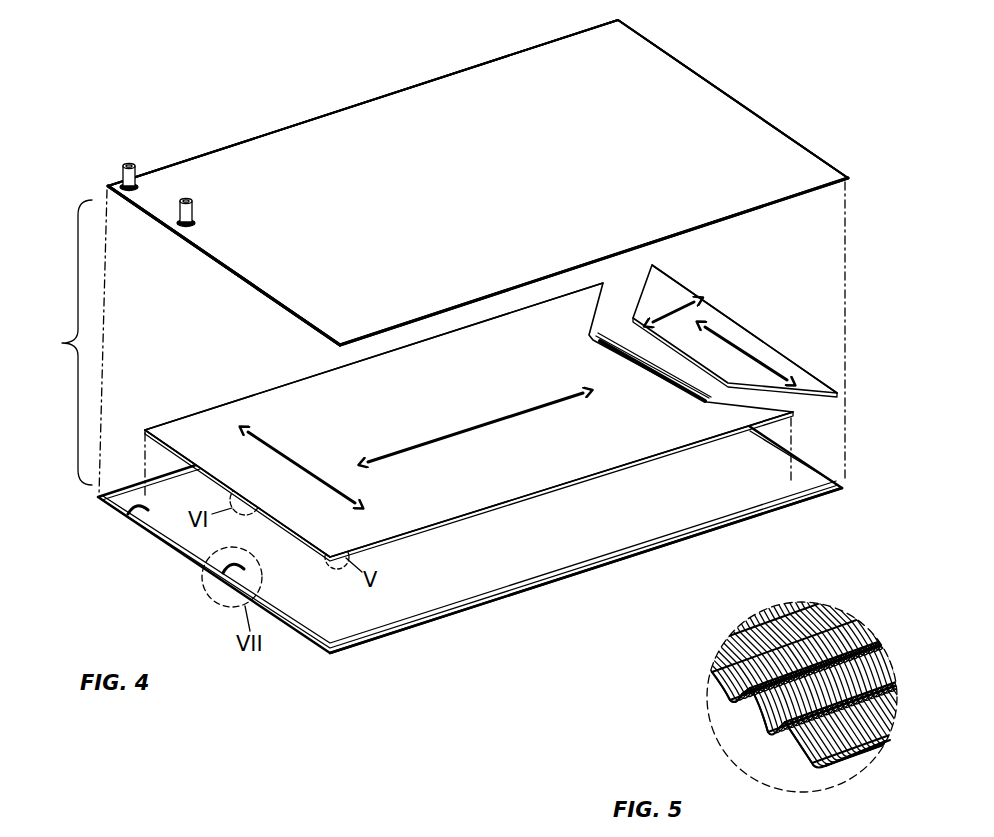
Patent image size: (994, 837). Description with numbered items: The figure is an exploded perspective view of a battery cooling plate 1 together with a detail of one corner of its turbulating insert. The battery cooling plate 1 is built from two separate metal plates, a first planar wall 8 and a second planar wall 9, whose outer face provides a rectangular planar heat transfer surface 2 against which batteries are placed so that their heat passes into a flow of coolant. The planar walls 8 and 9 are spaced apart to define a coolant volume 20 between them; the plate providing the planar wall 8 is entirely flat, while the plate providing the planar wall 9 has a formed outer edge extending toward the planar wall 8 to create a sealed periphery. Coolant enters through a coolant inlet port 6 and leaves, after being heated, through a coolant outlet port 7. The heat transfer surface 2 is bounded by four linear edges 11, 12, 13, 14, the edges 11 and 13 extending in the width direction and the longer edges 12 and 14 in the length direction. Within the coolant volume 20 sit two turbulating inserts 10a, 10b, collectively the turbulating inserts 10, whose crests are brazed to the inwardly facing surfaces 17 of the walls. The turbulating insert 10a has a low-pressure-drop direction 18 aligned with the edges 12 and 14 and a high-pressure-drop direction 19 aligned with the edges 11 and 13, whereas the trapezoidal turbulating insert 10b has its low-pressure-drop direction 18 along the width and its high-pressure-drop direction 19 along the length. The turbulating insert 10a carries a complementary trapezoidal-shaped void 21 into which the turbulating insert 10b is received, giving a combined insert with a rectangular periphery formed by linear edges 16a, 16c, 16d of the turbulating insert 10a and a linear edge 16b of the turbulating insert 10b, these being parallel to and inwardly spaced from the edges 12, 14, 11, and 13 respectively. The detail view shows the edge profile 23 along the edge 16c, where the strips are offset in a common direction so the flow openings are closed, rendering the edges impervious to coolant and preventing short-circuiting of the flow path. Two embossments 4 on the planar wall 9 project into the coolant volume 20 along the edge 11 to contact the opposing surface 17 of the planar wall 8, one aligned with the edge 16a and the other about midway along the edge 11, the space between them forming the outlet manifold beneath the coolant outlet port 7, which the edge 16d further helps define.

In FIG. 4, the battery cooling plate 1 is at (283, 88).
In FIG. 4, the planar heat transfer surface 2 is at (453, 173).
In FIG. 4, the embossments 4 is at (122, 508).
In FIG. 4, the coolant inlet port 6 is at (131, 163).
In FIG. 4, the coolant outlet port 7 is at (192, 203).
In FIG. 4, the first planar wall 8 is at (353, 128).
In FIG. 4, the second planar wall 9 is at (365, 648).
In FIG. 5, the turbulating inserts 10 is at (852, 612).
In FIG. 4, the turbulating insert 10a is at (437, 512).
In FIG. 4, the turbulating insert 10b is at (813, 385).
In FIG. 4, the edge 11 is at (248, 286).
In FIG. 4, the edge 12 is at (467, 63).
In FIG. 4, the edge 13 is at (718, 85).
In FIG. 4, the edge 14 is at (748, 217).
In FIG. 4, the linear edge 16a is at (263, 392).
In FIG. 4, the linear edge 16b is at (708, 302).
In FIG. 4, the linear edge 16c is at (613, 472).
In FIG. 5, the linear edge 16c is at (857, 755).
In FIG. 4, the linear edge 16d is at (300, 540).
In FIG. 5, the linear edge 16d is at (747, 715).
In FIG. 4, the inwardly facing surface 17 is at (160, 228).
In FIG. 4, the low-pressure-drop direction 18 is at (493, 420).
In FIG. 4, the high-pressure-drop direction 19 is at (283, 450).
In FIG. 4, the coolant volume 20 is at (437, 339).
In FIG. 4, the trapezoidal-shaped void 21 is at (602, 318).
In FIG. 5, the edge profile 23 is at (862, 730).